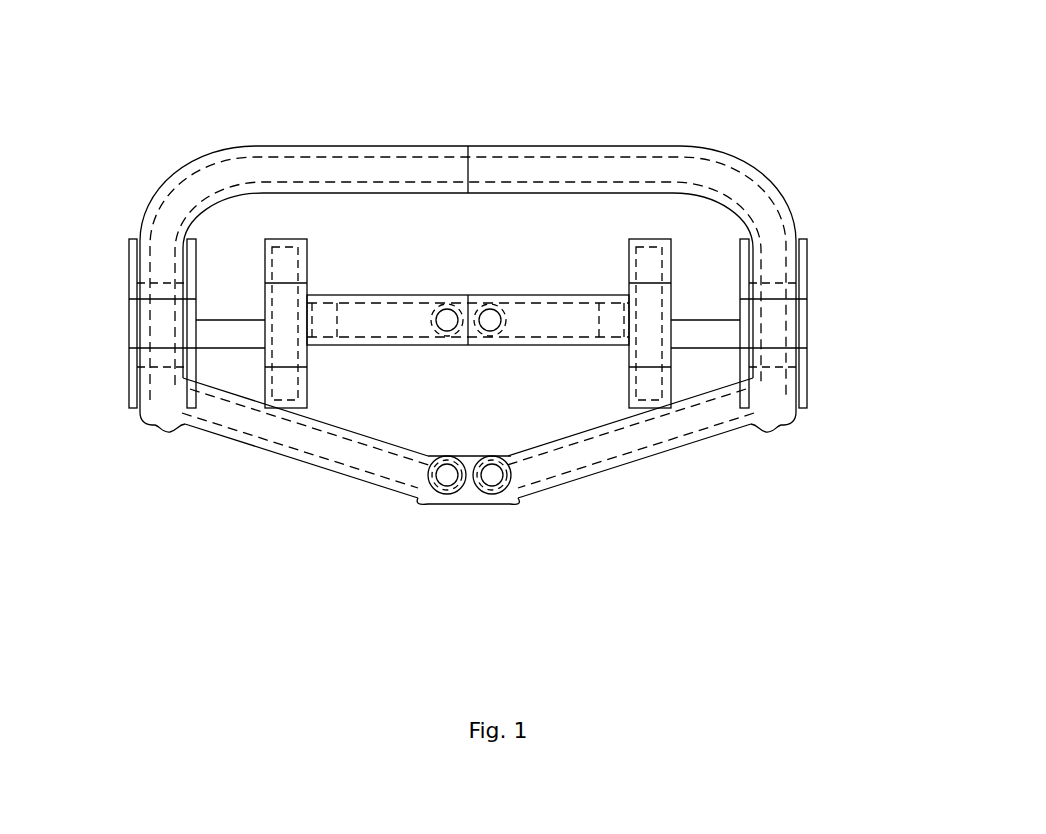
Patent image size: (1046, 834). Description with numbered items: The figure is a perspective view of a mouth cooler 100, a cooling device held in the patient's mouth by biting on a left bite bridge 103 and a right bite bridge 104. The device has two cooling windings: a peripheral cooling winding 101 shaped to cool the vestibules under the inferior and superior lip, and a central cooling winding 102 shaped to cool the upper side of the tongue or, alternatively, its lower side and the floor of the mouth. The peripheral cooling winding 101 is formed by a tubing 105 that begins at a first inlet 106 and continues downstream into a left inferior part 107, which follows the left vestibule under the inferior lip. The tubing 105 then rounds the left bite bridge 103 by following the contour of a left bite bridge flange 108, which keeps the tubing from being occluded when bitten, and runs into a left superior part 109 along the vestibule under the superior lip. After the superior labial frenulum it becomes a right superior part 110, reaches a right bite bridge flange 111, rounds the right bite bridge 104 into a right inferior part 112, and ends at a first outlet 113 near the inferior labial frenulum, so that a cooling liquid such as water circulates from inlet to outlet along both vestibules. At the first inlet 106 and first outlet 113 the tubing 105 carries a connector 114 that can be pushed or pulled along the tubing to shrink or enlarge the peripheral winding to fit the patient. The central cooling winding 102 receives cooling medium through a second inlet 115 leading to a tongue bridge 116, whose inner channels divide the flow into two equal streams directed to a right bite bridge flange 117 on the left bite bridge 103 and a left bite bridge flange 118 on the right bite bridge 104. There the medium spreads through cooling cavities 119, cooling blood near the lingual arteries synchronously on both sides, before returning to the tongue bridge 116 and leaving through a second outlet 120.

The mouth cooler 100 is at (578, 111).
The peripheral cooling winding 101 is at (779, 221).
The central cooling winding 102 is at (381, 299).
The left bite bridge 103 is at (700, 301).
The right bite bridge 104 is at (248, 301).
The tubing 105 is at (592, 449).
The first inlet 106 is at (500, 478).
The left inferior part 107 is at (785, 411).
The left bite bridge flange 108 is at (752, 340).
The left superior part 109 is at (500, 155).
The right superior part 110 is at (353, 155).
The right bite bridge flange 111 is at (188, 310).
The right inferior part 112 is at (164, 421).
The first outlet 113 is at (443, 486).
The connector 114 is at (475, 509).
The second inlet 115 is at (490, 306).
The tongue bridge 116 is at (548, 293).
The right bite bridge flange 117 is at (662, 236).
The left bite bridge flange 118 is at (291, 236).
The cooling cavities 119 is at (645, 381).
The second outlet 120 is at (447, 306).